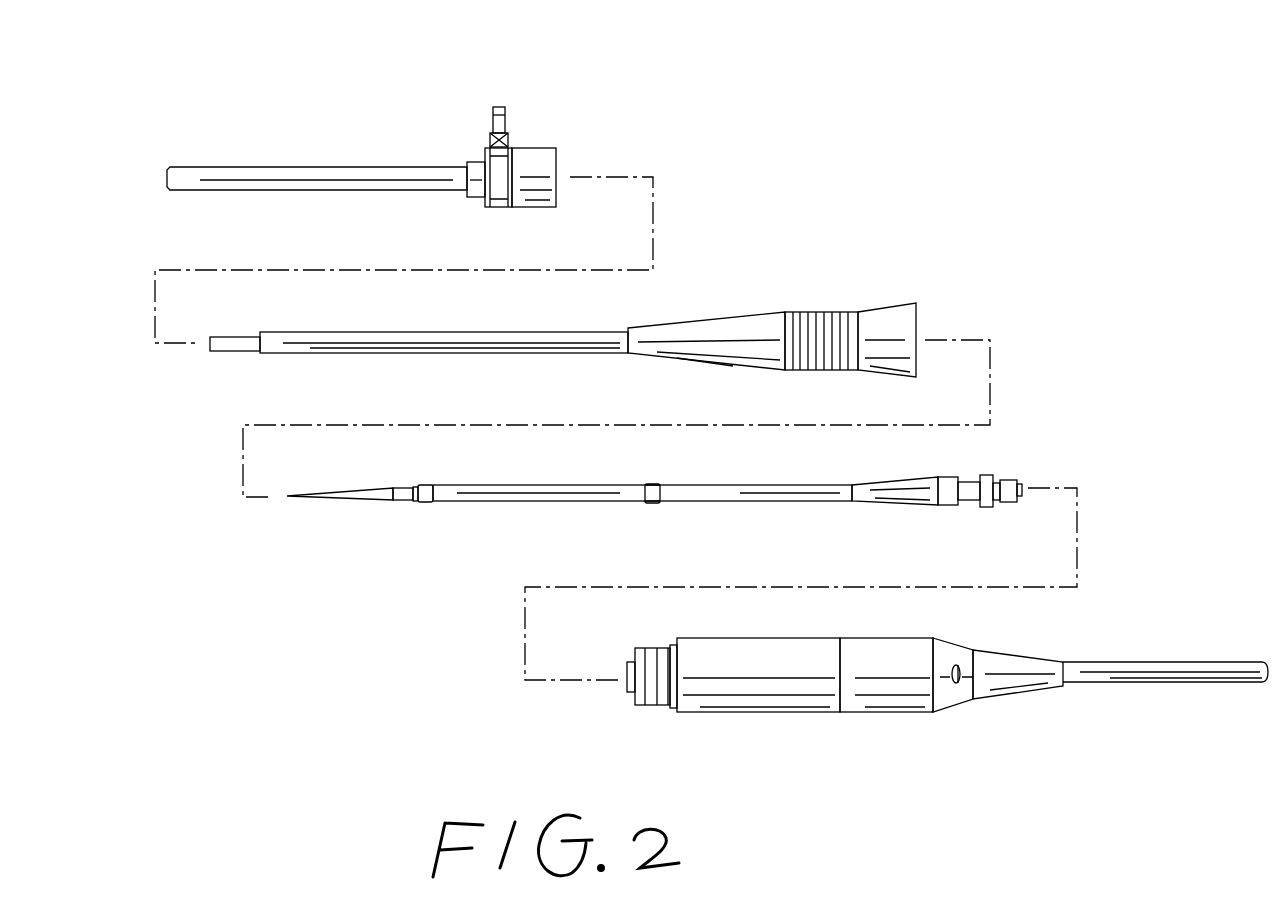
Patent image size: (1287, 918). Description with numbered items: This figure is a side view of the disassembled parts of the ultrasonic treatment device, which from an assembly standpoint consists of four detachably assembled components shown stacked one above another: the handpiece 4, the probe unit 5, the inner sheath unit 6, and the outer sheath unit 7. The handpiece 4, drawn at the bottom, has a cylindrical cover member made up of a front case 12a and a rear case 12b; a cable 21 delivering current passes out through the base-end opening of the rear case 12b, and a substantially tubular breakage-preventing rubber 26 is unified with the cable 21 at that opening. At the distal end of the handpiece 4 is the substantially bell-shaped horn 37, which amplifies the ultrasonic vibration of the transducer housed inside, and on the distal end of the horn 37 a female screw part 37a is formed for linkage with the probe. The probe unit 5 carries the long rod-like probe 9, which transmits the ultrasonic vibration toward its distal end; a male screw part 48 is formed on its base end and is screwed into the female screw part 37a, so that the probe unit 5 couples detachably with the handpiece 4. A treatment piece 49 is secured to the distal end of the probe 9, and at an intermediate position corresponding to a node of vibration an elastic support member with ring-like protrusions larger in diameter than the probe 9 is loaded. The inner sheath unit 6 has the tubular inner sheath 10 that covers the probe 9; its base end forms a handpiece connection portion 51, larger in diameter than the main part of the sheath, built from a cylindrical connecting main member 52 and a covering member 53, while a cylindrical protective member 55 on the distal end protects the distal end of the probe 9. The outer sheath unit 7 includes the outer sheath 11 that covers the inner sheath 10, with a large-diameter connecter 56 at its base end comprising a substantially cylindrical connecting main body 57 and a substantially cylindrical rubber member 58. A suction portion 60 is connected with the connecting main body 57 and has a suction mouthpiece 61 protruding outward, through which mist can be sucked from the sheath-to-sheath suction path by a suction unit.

The handpiece 4 is at (911, 706).
The probe unit 5 is at (642, 524).
The inner sheath unit 6 is at (563, 300).
The outer sheath unit 7 is at (402, 133).
The probe 9 is at (733, 486).
The inner sheath 10 is at (598, 332).
The outer sheath 11 is at (384, 170).
The front case 12a is at (778, 650).
The rear case 12b is at (905, 698).
The cable 21 is at (1188, 661).
The breakage-preventing rubber 26 is at (1027, 690).
The horn 37 is at (628, 692).
The female screw part 37a is at (628, 668).
The male screw part 48 is at (1006, 480).
The treatment piece 49 is at (293, 510).
The handpiece connection portion 51 is at (772, 291).
The connecting main member 52 is at (770, 312).
The covering member 53 is at (900, 310).
The protective member 55 is at (232, 352).
The connecter 56 is at (570, 133).
The connecting main body 57 is at (476, 197).
The rubber member 58 is at (545, 208).
The suction portion 60 is at (512, 79).
The suction mouthpiece 61 is at (505, 120).